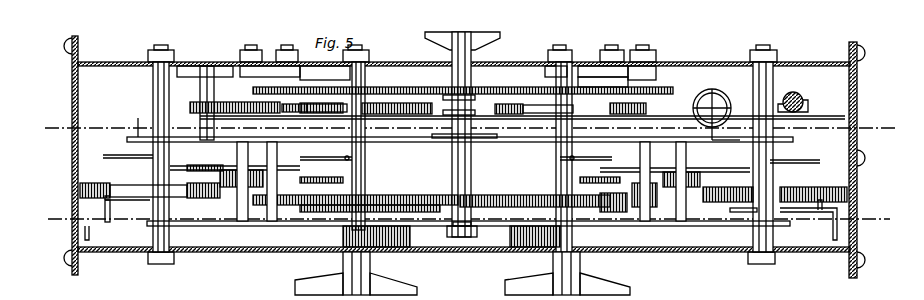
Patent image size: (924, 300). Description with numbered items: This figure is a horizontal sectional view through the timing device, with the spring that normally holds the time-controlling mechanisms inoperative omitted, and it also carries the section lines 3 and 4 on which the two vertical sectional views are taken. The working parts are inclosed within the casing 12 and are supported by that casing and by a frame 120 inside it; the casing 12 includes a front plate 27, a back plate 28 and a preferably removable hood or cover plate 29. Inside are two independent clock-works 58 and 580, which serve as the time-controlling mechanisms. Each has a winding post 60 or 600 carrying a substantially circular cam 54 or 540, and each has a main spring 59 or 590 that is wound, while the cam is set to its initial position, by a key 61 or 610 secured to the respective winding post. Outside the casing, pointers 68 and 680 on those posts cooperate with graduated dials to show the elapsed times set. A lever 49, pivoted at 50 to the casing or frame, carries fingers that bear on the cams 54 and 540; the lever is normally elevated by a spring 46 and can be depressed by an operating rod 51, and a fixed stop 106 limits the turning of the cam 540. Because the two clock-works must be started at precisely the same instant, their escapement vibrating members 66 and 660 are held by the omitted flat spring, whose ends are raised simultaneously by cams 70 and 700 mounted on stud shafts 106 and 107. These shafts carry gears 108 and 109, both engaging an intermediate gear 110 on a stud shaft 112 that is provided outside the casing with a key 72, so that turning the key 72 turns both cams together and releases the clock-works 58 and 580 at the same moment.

The section line 3— 3 is at (468, 128).
The section line 4— 4 is at (466, 219).
The casing 12 is at (72, 66).
The front plate 27 is at (710, 62).
The back plate 28 is at (718, 252).
The hood or cover plate 29 is at (858, 104).
The spring 46 is at (716, 92).
The lever 49 is at (418, 119).
The pivot 50 is at (212, 124).
The operating rod 51 is at (800, 98).
The circular cam 54 is at (394, 114).
The clock-work 58 is at (290, 212).
The main spring 59 is at (373, 253).
The winding post 60 is at (365, 178).
The key 61 is at (405, 288).
The vibrating member 66 is at (168, 154).
The pointer 68 is at (366, 56).
The cam 70 is at (365, 158).
The key 72 is at (498, 44).
The stud shaft 106 is at (288, 127).
The stud shaft 107 is at (612, 114).
The gear 108 is at (253, 90).
The gear 109 is at (672, 92).
The intermediate gear 110 is at (408, 85).
The stud shaft 112 is at (471, 86).
The frame 120 is at (808, 145).
The circular cam 540 is at (523, 114).
The clock-work 580 is at (636, 222).
The main spring 590 is at (530, 252).
The winding post 600 is at (560, 172).
The key 610 is at (612, 287).
The vibrating member 660 is at (735, 162).
The pointer 680 is at (604, 62).
The cam 700 is at (560, 158).